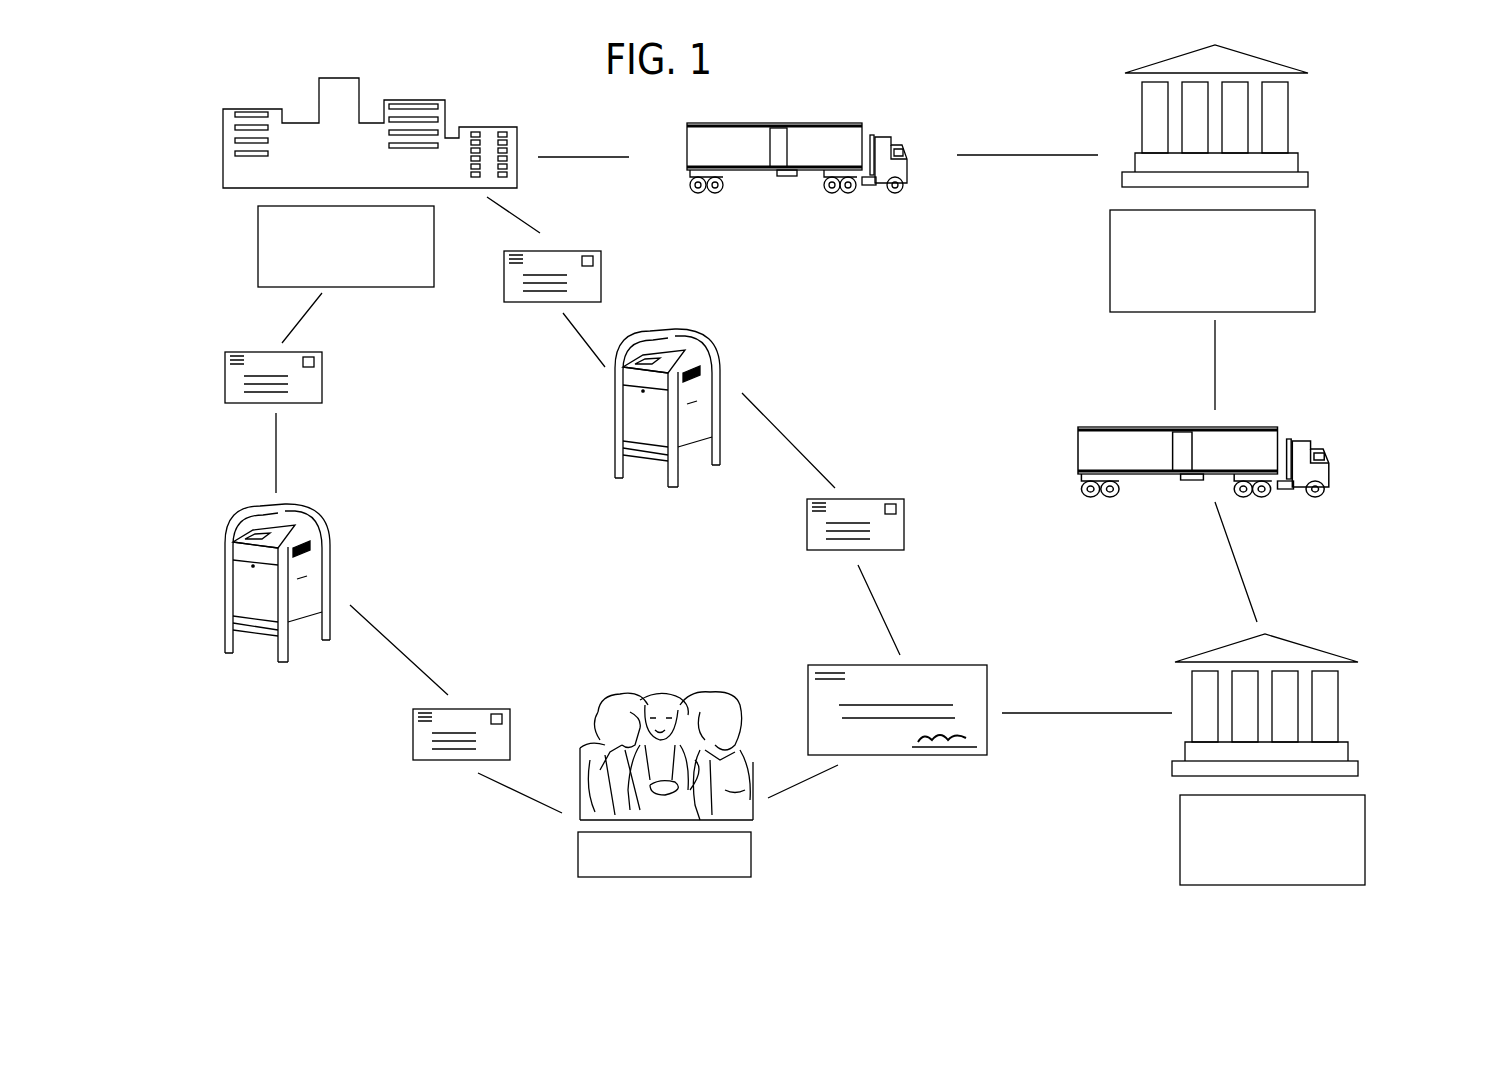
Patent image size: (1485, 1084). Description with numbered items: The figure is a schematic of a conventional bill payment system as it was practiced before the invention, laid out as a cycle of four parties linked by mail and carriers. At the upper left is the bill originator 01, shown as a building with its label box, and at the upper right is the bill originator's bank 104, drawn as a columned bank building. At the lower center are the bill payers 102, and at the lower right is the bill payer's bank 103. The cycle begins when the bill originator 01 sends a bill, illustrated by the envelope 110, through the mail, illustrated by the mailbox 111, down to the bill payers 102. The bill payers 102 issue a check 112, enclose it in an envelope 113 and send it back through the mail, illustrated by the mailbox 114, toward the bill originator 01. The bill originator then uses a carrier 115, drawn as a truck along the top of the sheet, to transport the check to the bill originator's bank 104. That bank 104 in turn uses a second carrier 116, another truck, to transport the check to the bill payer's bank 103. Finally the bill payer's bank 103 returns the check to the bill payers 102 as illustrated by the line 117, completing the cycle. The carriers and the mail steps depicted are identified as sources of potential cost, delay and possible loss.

The bill originator 01 is at (257, 253).
The bill payers 102 is at (752, 847).
The bill payer's bank 103 is at (1367, 803).
The bill originator's bank 104 is at (1315, 227).
The envelope 110 is at (318, 397).
The mailbox 111 is at (328, 542).
The check 112 is at (978, 663).
The envelope 113 is at (903, 515).
The mailbox 114 is at (719, 345).
The carrier 115 is at (890, 138).
The carrier 116 is at (1308, 445).
The line 117 is at (1088, 713).